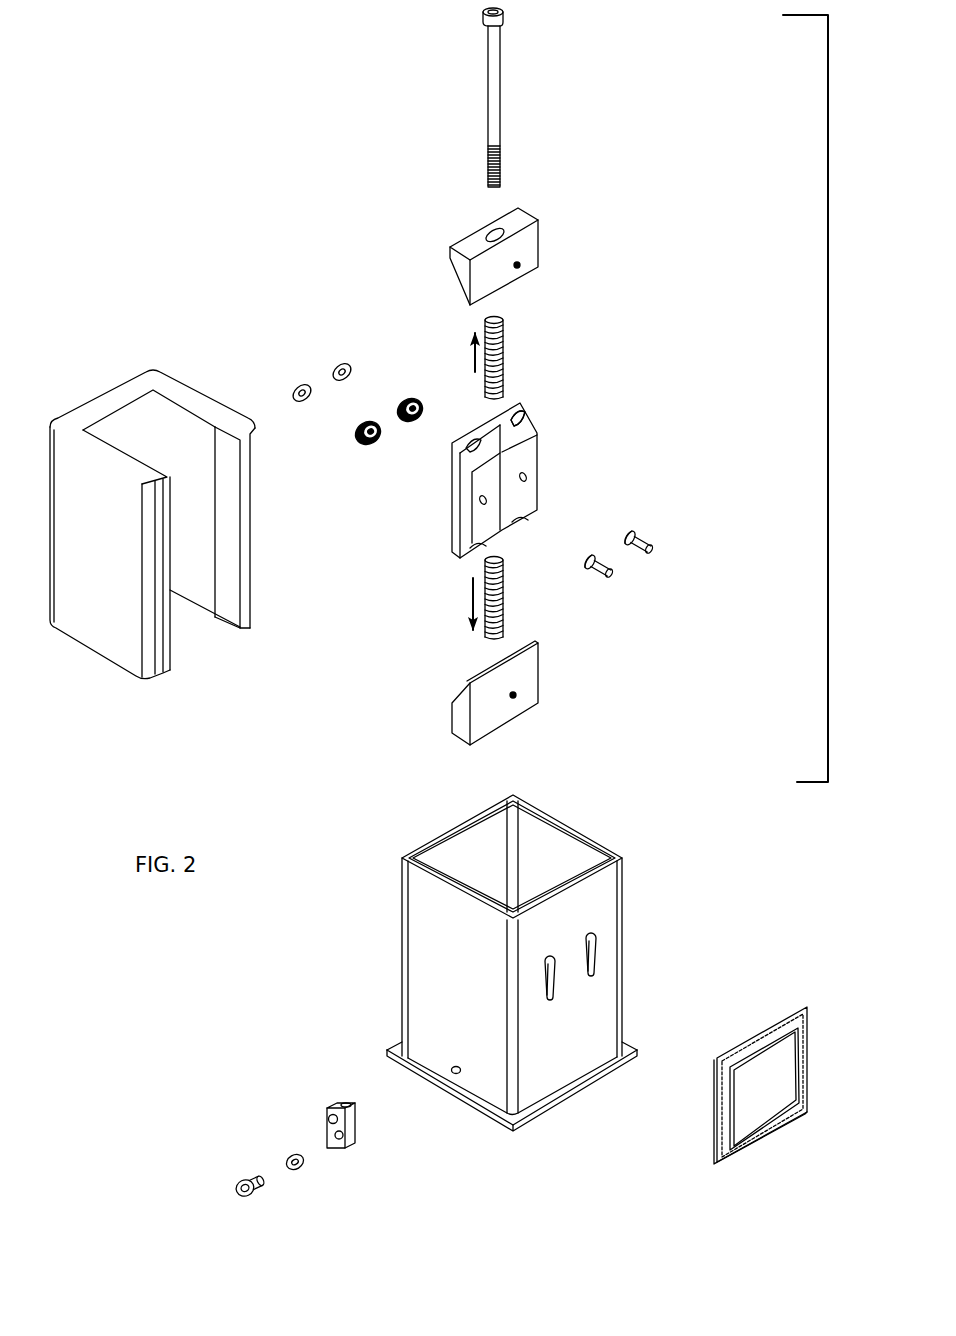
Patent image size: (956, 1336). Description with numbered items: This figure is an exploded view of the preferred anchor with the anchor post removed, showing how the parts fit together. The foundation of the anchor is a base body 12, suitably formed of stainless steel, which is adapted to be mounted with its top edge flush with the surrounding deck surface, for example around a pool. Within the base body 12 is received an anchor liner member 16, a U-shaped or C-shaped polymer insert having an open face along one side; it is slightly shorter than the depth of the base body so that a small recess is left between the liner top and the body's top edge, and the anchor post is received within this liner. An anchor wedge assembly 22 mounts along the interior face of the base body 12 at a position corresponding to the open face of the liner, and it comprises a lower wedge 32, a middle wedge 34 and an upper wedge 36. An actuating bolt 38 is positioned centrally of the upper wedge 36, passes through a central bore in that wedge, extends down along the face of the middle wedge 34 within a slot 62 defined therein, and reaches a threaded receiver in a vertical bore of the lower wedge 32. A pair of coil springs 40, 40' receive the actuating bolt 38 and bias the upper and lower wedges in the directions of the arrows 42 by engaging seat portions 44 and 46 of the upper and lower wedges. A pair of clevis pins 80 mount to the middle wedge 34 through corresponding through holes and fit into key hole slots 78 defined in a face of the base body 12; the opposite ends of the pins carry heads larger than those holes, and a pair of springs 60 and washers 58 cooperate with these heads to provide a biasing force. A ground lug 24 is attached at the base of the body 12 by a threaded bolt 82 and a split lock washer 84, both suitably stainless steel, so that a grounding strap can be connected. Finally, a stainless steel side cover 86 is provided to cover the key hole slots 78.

The base body 12 is at (469, 964).
The anchor liner member 16 is at (102, 407).
The anchor wedge assembly 22 is at (828, 355).
The ground lug 24 is at (349, 1129).
The lower wedge 32 is at (514, 696).
The middle wedge 34 is at (546, 444).
The upper wedge 36 is at (518, 264).
The actuating bolt 38 is at (503, 111).
The coil spring 40 is at (580, 312).
The coil spring 40' is at (586, 536).
The arrows 42 is at (473, 353).
The seat portion 44 is at (451, 286).
The seat portion 46 is at (477, 672).
The washers 58 is at (301, 381).
The springs 60 is at (365, 446).
The slot 62 is at (530, 437).
The key hole slots 78 is at (596, 953).
The clevis pins 80 is at (650, 536).
The threaded bolt 82 is at (233, 1180).
The split lock washer 84 is at (292, 1157).
The side cover 86 is at (783, 1023).